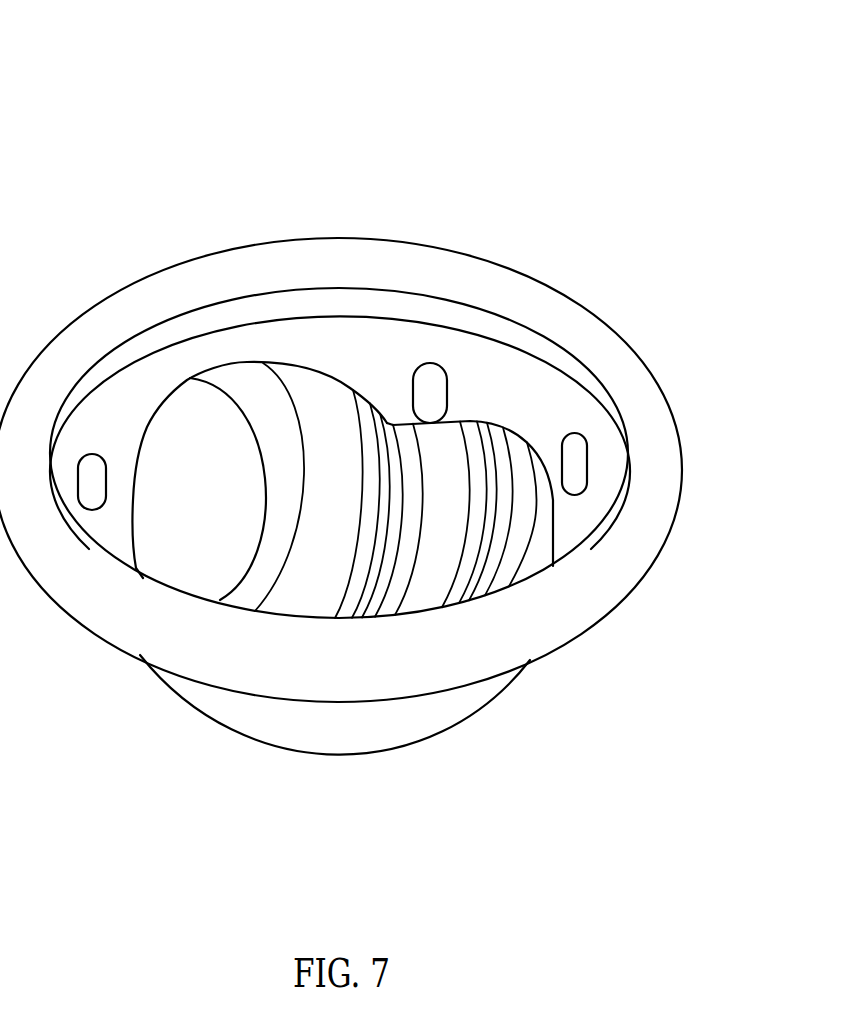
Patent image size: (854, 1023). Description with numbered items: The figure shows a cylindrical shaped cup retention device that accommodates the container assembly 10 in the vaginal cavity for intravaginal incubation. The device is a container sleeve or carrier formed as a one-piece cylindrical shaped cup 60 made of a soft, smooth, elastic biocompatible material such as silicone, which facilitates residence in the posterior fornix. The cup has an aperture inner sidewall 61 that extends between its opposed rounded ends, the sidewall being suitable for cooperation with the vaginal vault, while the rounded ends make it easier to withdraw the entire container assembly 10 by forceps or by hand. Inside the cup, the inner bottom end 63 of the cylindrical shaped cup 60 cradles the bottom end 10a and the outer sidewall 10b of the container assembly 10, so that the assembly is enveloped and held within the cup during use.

The container assembly 10 is at (168, 357).
The bottom end 10a is at (558, 499).
The outer sidewall 10b is at (383, 406).
The cylindrical shaped cup 60 is at (385, 335).
The aperture inner sidewall 61 is at (343, 340).
The inner bottom end 63 is at (322, 744).